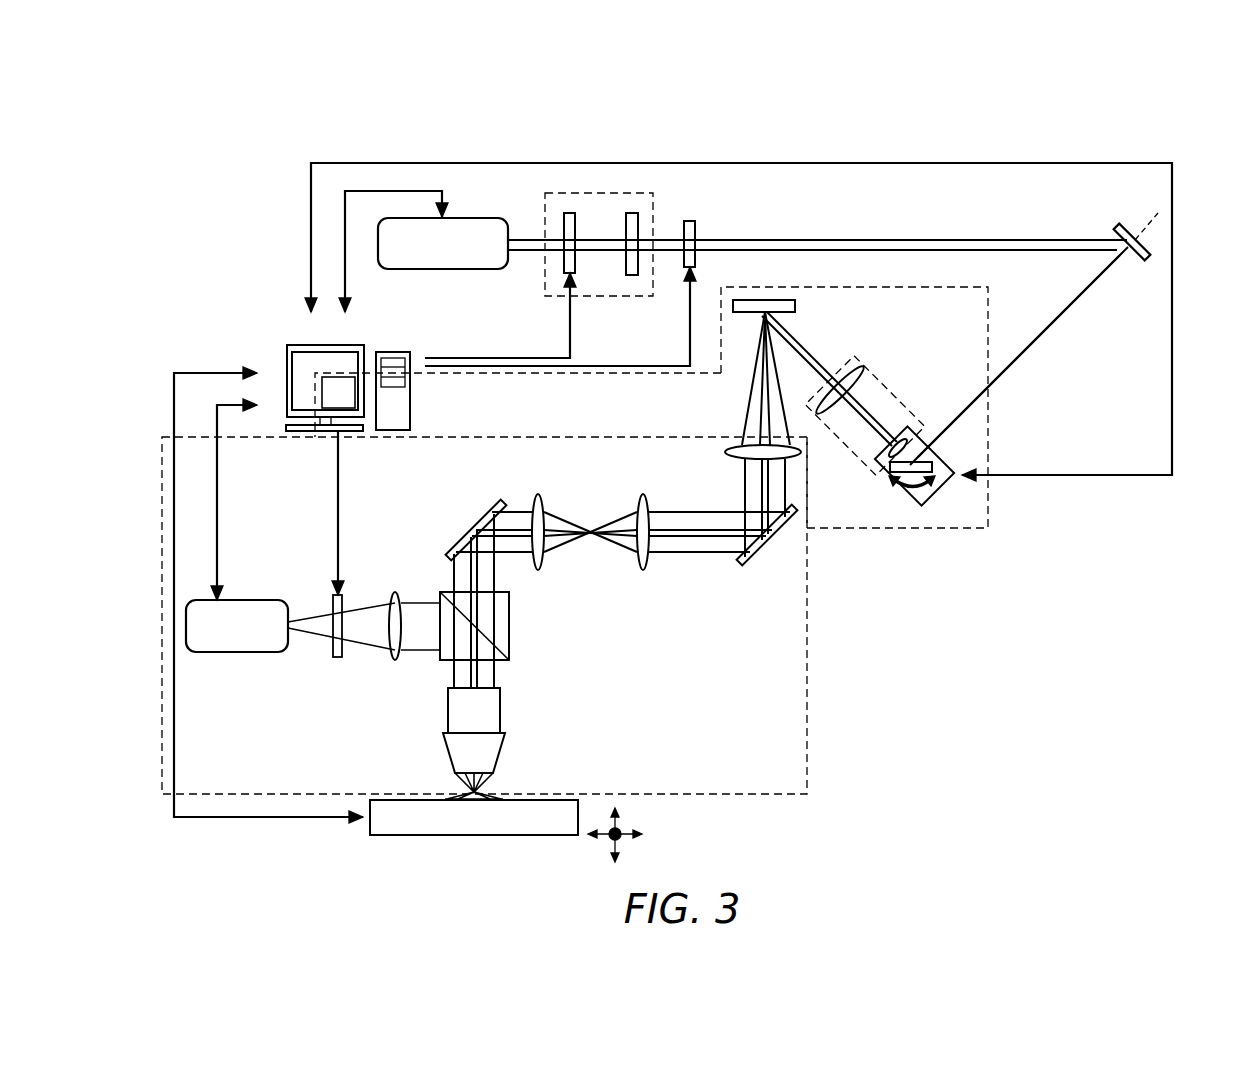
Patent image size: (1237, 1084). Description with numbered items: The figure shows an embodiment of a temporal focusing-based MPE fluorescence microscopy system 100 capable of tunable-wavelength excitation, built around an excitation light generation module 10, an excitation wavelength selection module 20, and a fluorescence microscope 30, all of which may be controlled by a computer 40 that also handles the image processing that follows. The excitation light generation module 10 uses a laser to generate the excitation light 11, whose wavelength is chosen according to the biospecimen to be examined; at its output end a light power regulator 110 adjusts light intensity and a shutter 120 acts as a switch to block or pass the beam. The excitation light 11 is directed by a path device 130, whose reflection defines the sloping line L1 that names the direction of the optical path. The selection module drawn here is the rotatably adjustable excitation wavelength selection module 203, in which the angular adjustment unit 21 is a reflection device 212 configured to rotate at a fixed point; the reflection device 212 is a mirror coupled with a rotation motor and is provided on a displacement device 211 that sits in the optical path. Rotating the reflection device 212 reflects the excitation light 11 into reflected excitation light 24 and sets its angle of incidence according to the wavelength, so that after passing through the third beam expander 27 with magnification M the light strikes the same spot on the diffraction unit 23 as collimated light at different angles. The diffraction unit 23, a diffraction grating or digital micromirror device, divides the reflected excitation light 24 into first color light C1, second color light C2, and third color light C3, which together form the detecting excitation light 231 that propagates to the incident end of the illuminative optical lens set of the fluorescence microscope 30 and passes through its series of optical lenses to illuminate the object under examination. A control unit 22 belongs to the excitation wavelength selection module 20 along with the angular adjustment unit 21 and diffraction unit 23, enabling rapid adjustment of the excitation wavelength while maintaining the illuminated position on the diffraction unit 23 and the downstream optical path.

The temporal focusing-based MPE fluorescence microscopy system 100 is at (1202, 100).
The excitation light generation module 10 is at (472, 218).
The excitation light 11 is at (1093, 270).
The light power regulator 110 is at (603, 193).
The shutter 120 is at (689, 221).
The path device 130 is at (1125, 228).
The sloping line L1 is at (1143, 230).
The excitation wavelength selection module 20 is at (990, 431).
The rotatably adjustable excitation wavelength selection module 203 is at (651, 407).
The angular adjustment unit 21 is at (992, 582).
The displacement device 211 is at (953, 474).
The reflection device 212 is at (934, 464).
The control unit 22 is at (351, 405).
The diffraction unit 23 is at (797, 306).
The detecting excitation light 231 is at (632, 377).
The first color light C1 is at (778, 383).
The second color light C2 is at (767, 403).
The third color light C3 is at (742, 425).
The reflected excitation light 24 is at (855, 410).
The third beam expander 27 is at (880, 375).
The fluorescence microscope 30 is at (808, 735).
The computer 40 is at (420, 340).